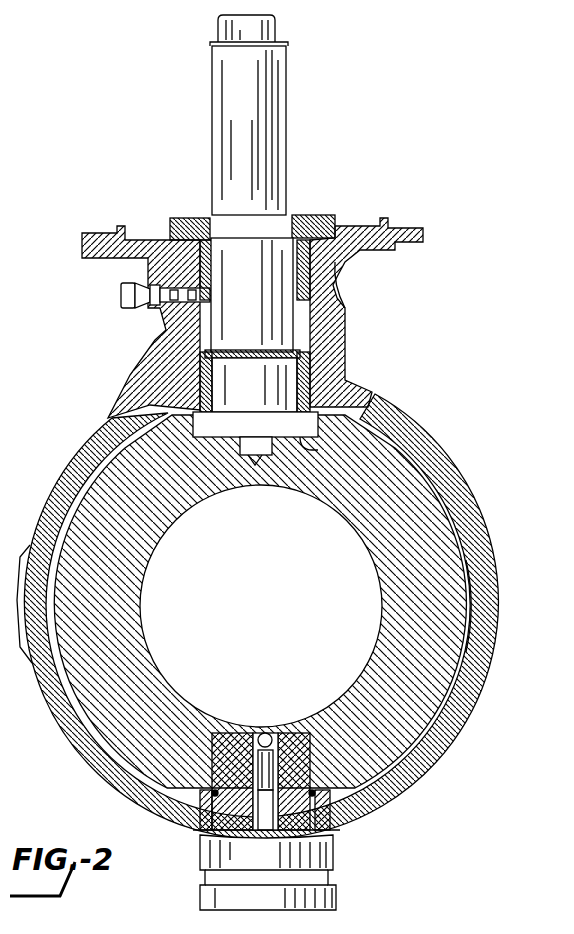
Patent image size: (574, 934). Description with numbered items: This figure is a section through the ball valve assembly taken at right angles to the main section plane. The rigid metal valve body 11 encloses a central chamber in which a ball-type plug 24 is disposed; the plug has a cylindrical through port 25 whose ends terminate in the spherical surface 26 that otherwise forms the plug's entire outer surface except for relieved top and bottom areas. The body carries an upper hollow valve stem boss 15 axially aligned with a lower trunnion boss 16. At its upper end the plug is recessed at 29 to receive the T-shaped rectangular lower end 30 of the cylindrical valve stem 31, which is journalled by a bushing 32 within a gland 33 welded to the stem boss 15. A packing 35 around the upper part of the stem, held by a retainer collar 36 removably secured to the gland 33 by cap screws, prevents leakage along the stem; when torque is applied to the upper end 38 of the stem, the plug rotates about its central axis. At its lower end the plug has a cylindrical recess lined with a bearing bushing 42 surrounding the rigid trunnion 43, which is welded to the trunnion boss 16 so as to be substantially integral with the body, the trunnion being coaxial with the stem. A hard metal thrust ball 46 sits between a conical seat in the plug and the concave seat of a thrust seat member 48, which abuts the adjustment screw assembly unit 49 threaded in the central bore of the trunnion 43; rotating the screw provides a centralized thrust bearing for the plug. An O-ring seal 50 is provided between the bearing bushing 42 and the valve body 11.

The valve body 11 is at (489, 527).
The valve stem boss 15 is at (347, 360).
The trunnion boss 16 is at (333, 849).
The ball-type plug 24 is at (437, 498).
The through port 25 is at (176, 497).
The spherical surface 26 is at (468, 612).
The recess 29 is at (304, 442).
The T-shaped rectangular lower end 30 is at (268, 435).
The valve stem 31 is at (257, 334).
The bushing 32 is at (213, 383).
The gland 33 is at (340, 293).
The packing 35 is at (333, 240).
The retainer collar 36 is at (322, 213).
The upper end of valve stem 38 is at (288, 174).
The bearing bushing 42 is at (316, 757).
The trunnion 43 is at (310, 762).
The thrust ball 46 is at (265, 733).
The thrust seat member 48 is at (232, 781).
The adjustment screw assembly unit 49 is at (270, 810).
The O-ring seal 50 is at (218, 796).